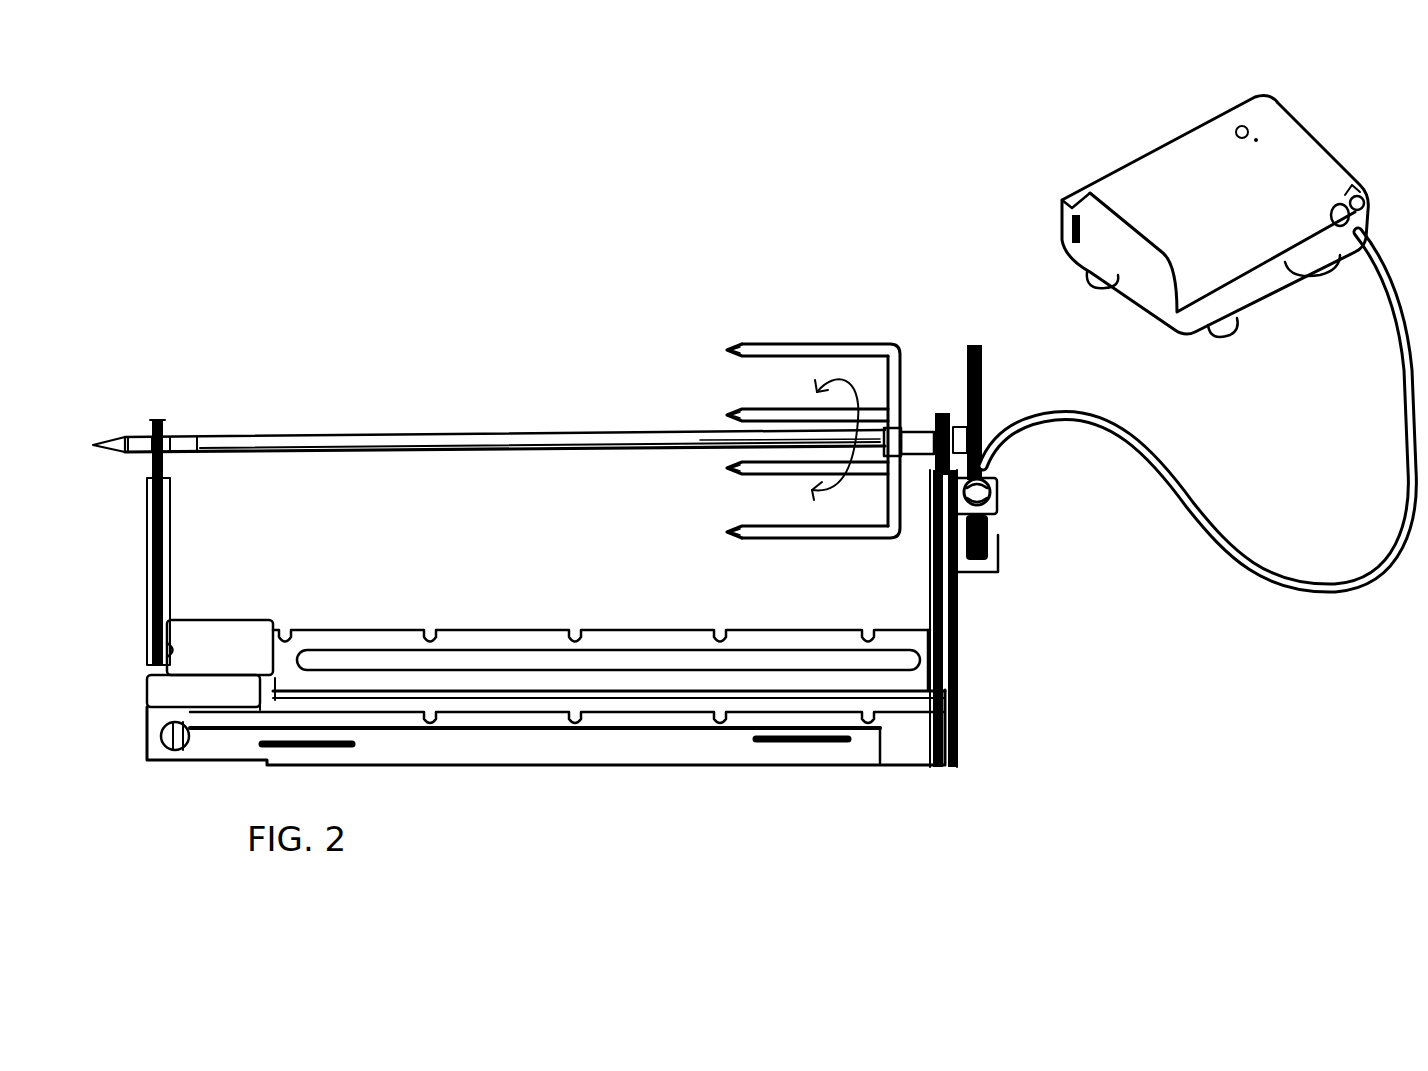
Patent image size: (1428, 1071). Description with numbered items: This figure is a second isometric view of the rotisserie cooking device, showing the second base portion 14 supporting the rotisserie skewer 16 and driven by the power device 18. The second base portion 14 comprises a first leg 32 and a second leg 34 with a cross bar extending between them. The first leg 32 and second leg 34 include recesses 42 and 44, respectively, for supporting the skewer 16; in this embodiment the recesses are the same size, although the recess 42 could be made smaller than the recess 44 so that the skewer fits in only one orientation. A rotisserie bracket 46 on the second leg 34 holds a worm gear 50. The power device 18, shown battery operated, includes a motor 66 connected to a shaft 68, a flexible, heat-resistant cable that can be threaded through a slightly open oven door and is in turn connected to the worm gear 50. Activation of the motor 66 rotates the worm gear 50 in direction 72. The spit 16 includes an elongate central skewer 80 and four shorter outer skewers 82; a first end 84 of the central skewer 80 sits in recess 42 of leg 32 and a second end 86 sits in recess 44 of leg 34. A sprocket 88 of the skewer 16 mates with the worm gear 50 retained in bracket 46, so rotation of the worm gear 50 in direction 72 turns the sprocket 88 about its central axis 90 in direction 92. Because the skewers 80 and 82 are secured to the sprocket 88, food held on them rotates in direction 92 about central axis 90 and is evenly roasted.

The second base portion 14 is at (170, 600).
The rotisserie skewer 16 is at (477, 440).
The power device 18 is at (1158, 293).
The first leg 32 is at (168, 511).
The second leg 34 is at (960, 641).
The recess 42 is at (163, 428).
The recess 44 is at (955, 433).
The rotisserie bracket 46 is at (992, 563).
The worm gear 50 is at (993, 528).
The motor 66 is at (1260, 273).
The shaft 68 is at (1400, 392).
The direction 72 is at (1003, 503).
The central skewer 80 is at (570, 438).
The outer skewers 82 is at (770, 345).
The first end 84 is at (240, 440).
The second end 86 is at (911, 432).
The sprocket 88 is at (984, 381).
The central axis 90 is at (707, 445).
The direction 92 is at (843, 398).